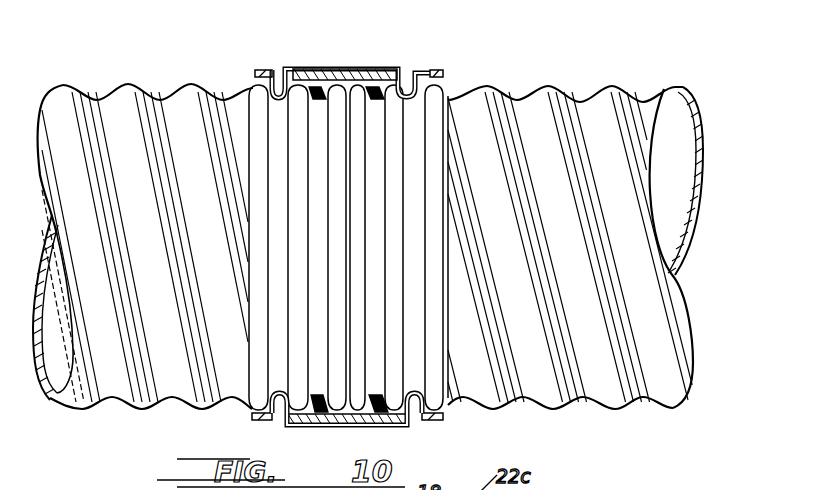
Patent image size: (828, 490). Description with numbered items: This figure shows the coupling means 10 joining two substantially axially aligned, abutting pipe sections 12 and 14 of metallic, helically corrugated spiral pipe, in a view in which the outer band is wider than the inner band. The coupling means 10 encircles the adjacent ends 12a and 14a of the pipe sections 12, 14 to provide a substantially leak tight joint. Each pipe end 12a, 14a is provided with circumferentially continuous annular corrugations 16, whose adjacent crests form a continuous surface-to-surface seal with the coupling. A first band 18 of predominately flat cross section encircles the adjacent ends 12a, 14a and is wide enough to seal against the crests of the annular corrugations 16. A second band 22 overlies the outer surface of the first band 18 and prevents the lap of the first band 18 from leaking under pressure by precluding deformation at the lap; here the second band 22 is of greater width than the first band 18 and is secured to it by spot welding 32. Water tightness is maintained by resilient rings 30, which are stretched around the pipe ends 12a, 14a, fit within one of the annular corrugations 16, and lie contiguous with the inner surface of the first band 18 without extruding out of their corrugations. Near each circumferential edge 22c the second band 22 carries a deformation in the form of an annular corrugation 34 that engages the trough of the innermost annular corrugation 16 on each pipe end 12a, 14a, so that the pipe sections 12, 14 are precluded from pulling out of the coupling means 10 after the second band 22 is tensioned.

The coupling means 10 is at (329, 45).
The pipe section 12 is at (148, 98).
The end of pipe section 12a is at (295, 157).
The pipe section 14 is at (610, 105).
The end of pipe section 14a is at (393, 193).
The annular corrugation 16 is at (322, 120).
The first band 18 is at (393, 72).
The second band 22 is at (330, 66).
The circumferential edge of second band 22c is at (440, 75).
The resilient ring 30 is at (380, 410).
The spot welding 32 is at (362, 72).
The annular corrugation of band 34 is at (283, 413).